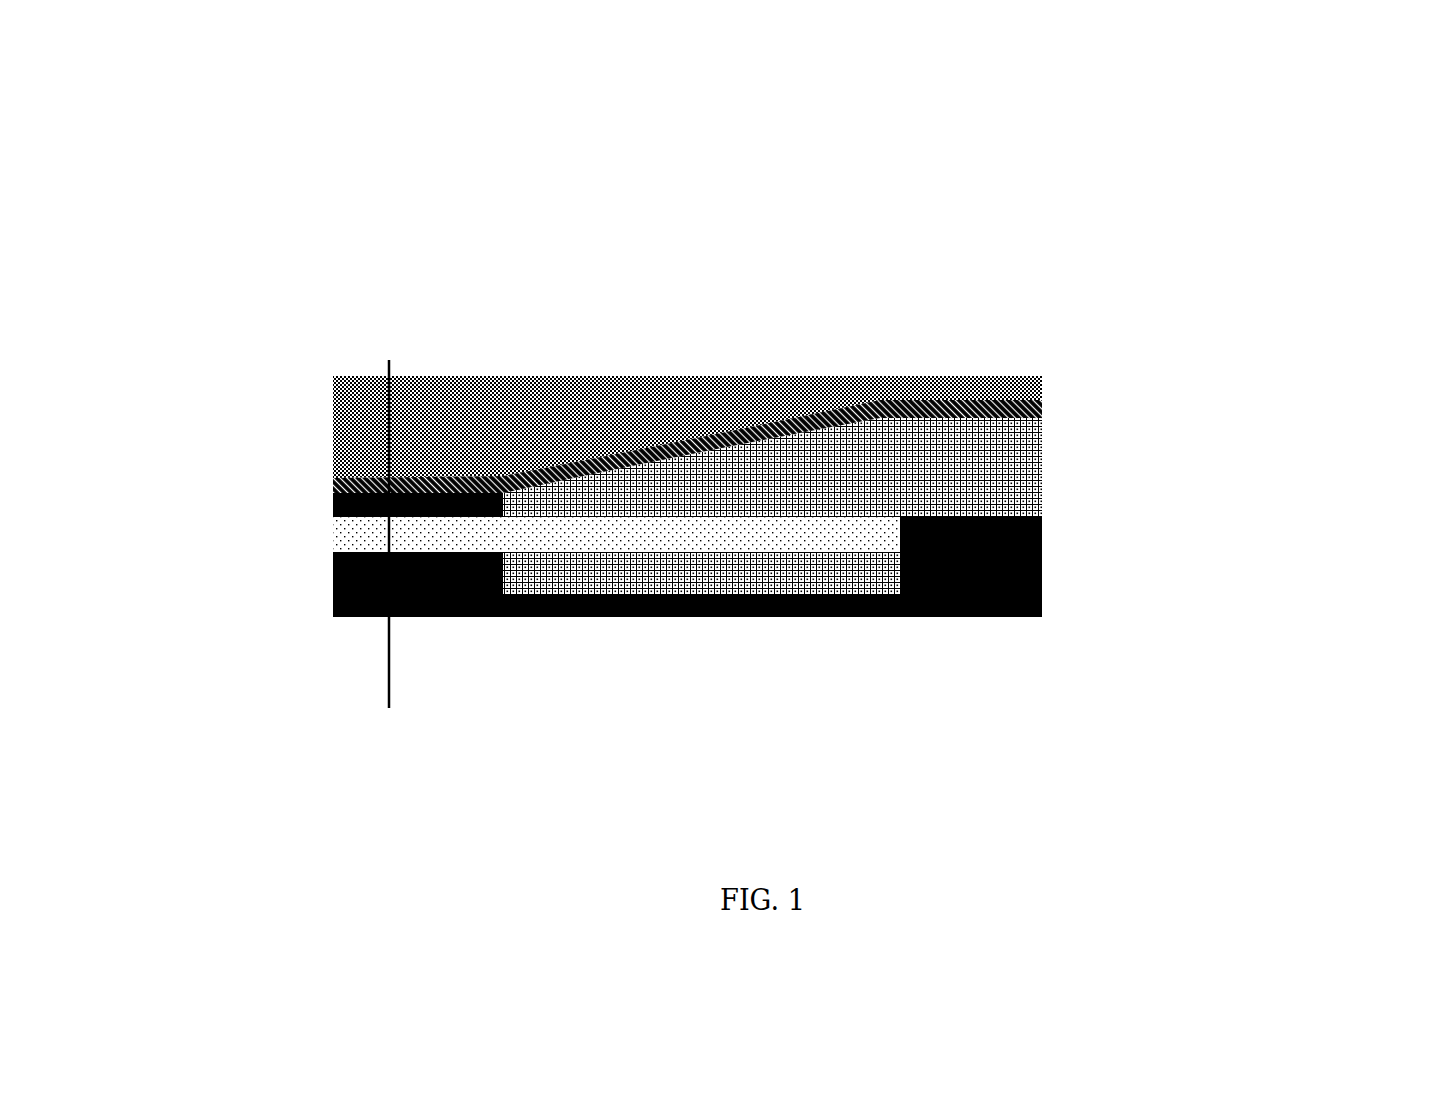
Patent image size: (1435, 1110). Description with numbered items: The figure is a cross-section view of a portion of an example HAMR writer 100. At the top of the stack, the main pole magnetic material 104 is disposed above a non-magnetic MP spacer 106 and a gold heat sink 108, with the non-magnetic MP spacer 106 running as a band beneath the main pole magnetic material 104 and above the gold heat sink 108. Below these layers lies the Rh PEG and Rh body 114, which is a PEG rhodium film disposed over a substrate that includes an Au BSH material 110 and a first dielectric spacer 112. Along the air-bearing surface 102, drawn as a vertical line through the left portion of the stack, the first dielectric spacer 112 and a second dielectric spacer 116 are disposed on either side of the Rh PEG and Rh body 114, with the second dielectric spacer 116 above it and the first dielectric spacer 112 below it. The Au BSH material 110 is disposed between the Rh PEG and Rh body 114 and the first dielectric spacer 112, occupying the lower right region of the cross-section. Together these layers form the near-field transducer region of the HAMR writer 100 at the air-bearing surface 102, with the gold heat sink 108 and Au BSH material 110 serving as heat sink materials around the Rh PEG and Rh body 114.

The HAMR writer 100 is at (1162, 72).
The air-bearing surface 102 is at (399, 512).
The main pole (MP) magnetic material 104 is at (583, 378).
The non-magnetic MP spacer 106 is at (1045, 410).
The gold (Au) heat sink 108 is at (1043, 469).
The Au BSH material 110 is at (895, 575).
The first dielectric spacer 112 is at (330, 583).
The Rh PEG and Rh body 114 is at (332, 537).
The second dielectric spacer 116 is at (332, 508).